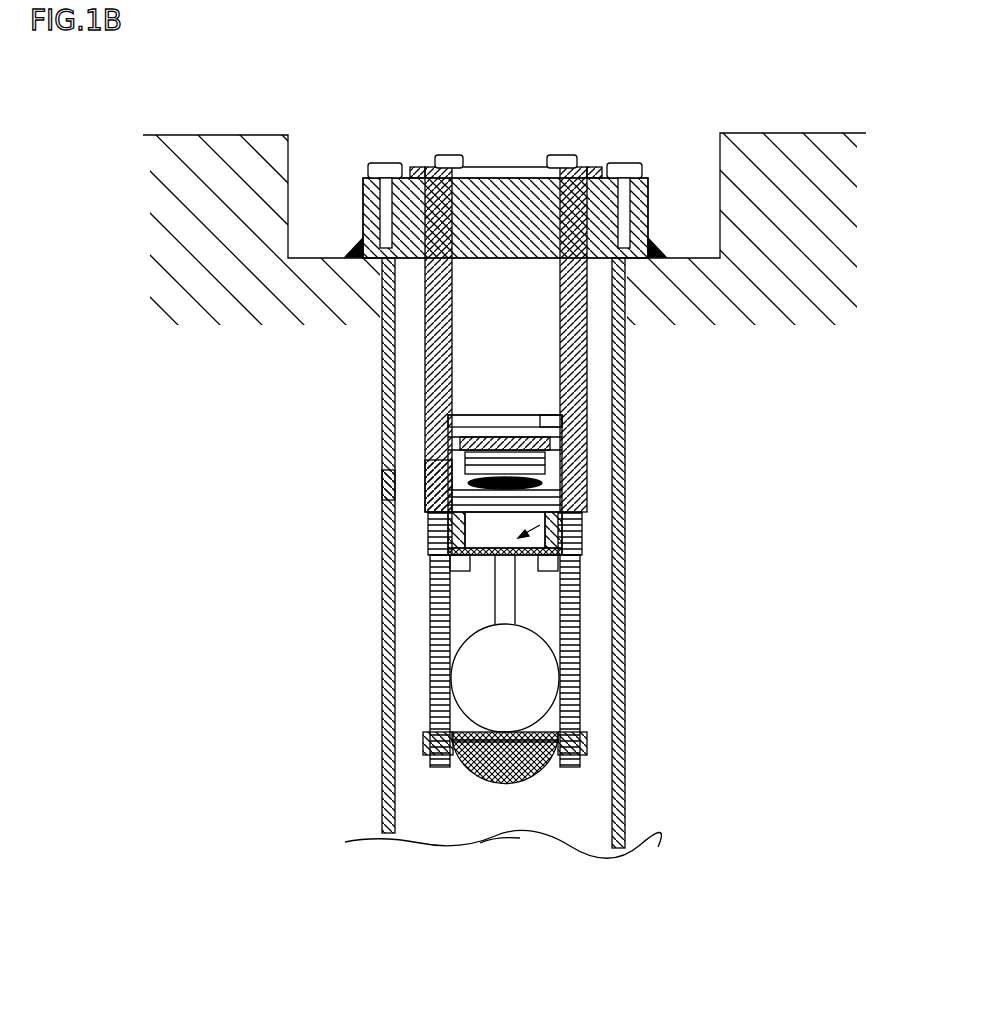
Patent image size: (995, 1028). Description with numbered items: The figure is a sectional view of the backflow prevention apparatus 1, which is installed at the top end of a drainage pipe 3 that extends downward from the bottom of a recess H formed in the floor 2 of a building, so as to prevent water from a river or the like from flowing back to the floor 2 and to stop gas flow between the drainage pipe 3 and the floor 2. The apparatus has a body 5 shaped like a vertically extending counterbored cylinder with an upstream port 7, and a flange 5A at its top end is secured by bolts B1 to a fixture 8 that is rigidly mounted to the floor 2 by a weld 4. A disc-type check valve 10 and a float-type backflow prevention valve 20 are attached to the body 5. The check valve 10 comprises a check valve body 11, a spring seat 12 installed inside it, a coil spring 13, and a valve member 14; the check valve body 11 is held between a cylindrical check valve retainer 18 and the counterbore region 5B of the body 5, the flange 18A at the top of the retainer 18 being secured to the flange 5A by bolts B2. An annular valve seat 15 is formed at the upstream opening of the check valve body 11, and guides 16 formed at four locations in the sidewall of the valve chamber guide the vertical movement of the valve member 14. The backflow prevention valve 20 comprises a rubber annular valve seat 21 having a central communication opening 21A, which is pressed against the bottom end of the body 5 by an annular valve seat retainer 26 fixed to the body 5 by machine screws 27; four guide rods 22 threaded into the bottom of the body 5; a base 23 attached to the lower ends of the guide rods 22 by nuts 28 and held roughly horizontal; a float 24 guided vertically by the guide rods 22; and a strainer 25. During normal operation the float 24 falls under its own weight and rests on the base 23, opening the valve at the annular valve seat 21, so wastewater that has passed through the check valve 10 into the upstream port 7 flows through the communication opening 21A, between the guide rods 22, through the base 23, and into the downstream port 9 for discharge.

The backflow prevention apparatus 1 is at (660, 95).
The floor 2 is at (232, 135).
The recess H is at (707, 150).
The flange 5A is at (363, 185).
The weld 4 is at (353, 252).
The fixture 8 is at (652, 242).
The bolts B1 is at (368, 163).
The bolts B2 is at (445, 155).
The check valve retainer 18 is at (508, 167).
The flange 18A is at (418, 167).
The body 5 is at (600, 357).
The drainage pipe 3 is at (392, 485).
The counterbore region 5B is at (445, 490).
The check valve 10 is at (502, 405).
The valve member 14 is at (482, 428).
The annular valve seat 15 is at (545, 415).
The coil spring 13 is at (447, 440).
The spring seat 12 is at (470, 468).
The guides 16 is at (548, 478).
The check valve body 11 is at (565, 495).
The communication opening 21A is at (540, 525).
The upstream port 7 is at (477, 528).
The valve seat retainer 26 is at (585, 555).
The machine screws 27 is at (432, 578).
The guide rods 22 is at (498, 607).
The annular valve seat 21 is at (532, 557).
The float 24 is at (533, 692).
The nuts 28 is at (423, 742).
The base 23 is at (467, 777).
The strainer 25 is at (552, 772).
The downstream port 9 is at (493, 810).
The backflow prevention valve 20 is at (416, 800).